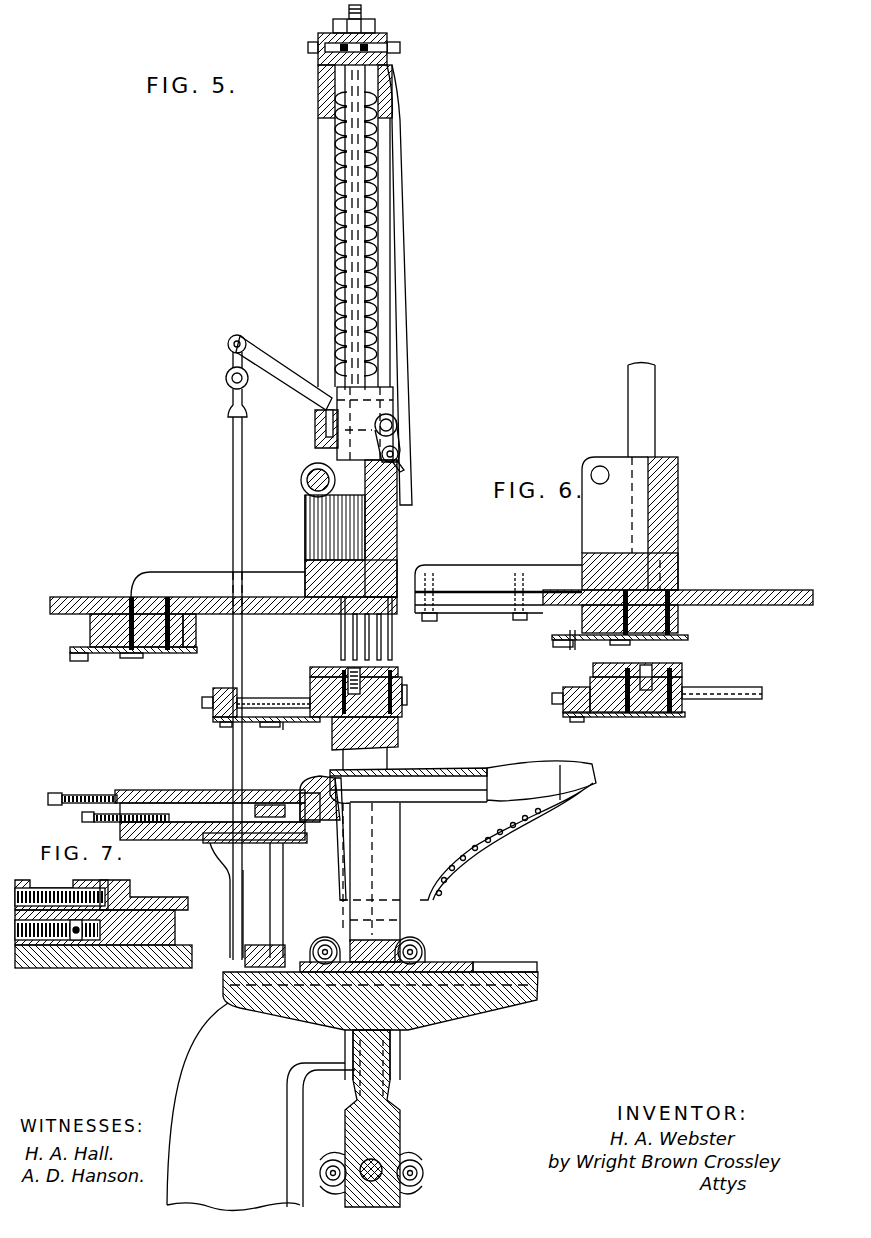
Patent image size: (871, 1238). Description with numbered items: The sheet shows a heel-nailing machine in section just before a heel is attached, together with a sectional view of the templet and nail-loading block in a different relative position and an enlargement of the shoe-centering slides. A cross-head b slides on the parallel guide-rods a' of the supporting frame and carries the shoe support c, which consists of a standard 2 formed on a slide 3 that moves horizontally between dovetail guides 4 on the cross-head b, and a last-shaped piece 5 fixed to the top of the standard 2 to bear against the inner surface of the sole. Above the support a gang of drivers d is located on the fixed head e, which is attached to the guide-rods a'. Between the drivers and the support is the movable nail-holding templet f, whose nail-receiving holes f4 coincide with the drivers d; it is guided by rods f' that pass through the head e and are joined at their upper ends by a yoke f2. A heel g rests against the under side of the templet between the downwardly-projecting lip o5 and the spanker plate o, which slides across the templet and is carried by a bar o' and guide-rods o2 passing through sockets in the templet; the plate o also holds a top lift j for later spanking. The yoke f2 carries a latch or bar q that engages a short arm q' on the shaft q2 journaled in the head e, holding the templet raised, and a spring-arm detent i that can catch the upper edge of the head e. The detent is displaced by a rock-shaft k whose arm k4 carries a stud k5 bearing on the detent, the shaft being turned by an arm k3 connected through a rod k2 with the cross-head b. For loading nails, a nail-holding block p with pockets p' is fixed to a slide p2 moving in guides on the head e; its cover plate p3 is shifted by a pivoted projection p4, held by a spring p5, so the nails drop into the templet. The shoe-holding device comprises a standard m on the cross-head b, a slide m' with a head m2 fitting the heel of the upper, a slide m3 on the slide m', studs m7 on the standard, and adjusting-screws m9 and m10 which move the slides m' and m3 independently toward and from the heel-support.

In FIG. 5, the bar or yoke f2 is at (372, 38).
In FIG. 5, the templet-guiding rods f' is at (387, 227).
In FIG. 5, the latch or bar q is at (329, 234).
In FIG. 5, the spring-arm detent i is at (402, 363).
In FIG. 5, the short arm q' is at (310, 429).
In FIG. 5, the rock-shaft k is at (397, 426).
In FIG. 5, the arm k4 is at (393, 447).
In FIG. 5, the stud k5 is at (392, 460).
In FIG. 5, the arm k3 is at (303, 362).
In FIG. 5, the rod or strap k2 is at (241, 486).
In FIG. 5, the shaft q2 is at (306, 487).
In FIG. 5, the head e is at (392, 565).
In FIG. 6, the head e is at (672, 553).
In FIG. 5, the nail-holding block p is at (115, 630).
In FIG. 6, the nail-holding block p is at (602, 624).
In FIG. 5, the nail holes or pockets p' is at (133, 591).
In FIG. 6, the nail holes or pockets p' is at (634, 586).
In FIG. 5, the slide p2 is at (200, 605).
In FIG. 6, the slide p2 is at (725, 590).
In FIG. 5, the movable plate or cover p3 is at (148, 655).
In FIG. 5, the arm or projection p4 is at (190, 636).
In FIG. 6, the spring p5 is at (665, 640).
In FIG. 5, the drivers d is at (341, 640).
In FIG. 5, the nail-holding templet f is at (334, 694).
In FIG. 5, the nail-receiving holes f4 is at (312, 668).
In FIG. 6, the nail-receiving holes f4 is at (593, 668).
In FIG. 5, the downwardly-projecting lip o5 is at (407, 715).
In FIG. 5, the heel g is at (398, 736).
In FIG. 5, the guide-rods a' is at (402, 754).
In FIG. 5, the bar o' is at (218, 691).
In FIG. 6, the bar o' is at (564, 693).
In FIG. 5, the guide-rods o2 is at (248, 697).
In FIG. 6, the guide-rods o2 is at (725, 688).
In FIG. 5, the slide or spanker plate o is at (266, 731).
In FIG. 6, the slide or spanker plate o is at (624, 707).
In FIG. 5, the top lift j is at (282, 722).
In FIG. 5, the slide m3 is at (195, 790).
In FIG. 7, the slide m3 is at (150, 897).
In FIG. 5, the studs or supports m7 is at (280, 805).
In FIG. 5, the adjusting-screw m10 is at (85, 793).
In FIG. 7, the adjusting-screw m10 is at (60, 895).
In FIG. 5, the adjusting-screw m9 is at (108, 822).
In FIG. 7, the adjusting-screw m9 is at (65, 940).
In FIG. 5, the slide m' is at (220, 821).
In FIG. 7, the slide m' is at (113, 939).
In FIG. 5, the standard m is at (256, 900).
In FIG. 5, the head m2 is at (322, 780).
In FIG. 5, the arm or last-shaped piece 5 is at (463, 782).
In FIG. 5, the support c is at (400, 795).
In FIG. 5, the standard 2 is at (372, 882).
In FIG. 5, the slide 3 is at (430, 968).
In FIG. 5, the cross-head b is at (440, 1020).
In FIG. 5, the dovetail guides 4 is at (438, 1173).